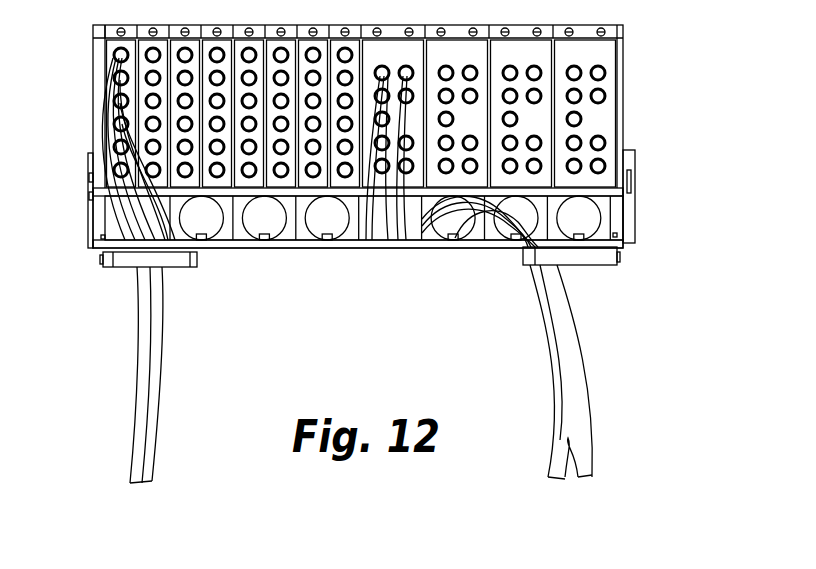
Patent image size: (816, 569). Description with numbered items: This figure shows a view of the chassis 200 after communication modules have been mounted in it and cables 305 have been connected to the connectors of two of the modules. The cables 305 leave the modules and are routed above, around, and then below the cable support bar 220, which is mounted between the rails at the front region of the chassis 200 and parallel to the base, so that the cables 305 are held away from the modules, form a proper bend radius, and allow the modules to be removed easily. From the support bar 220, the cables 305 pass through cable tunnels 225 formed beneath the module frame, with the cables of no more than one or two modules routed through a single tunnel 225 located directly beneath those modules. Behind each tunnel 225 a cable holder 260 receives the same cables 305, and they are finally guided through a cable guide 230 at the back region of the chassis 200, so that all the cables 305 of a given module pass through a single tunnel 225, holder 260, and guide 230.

The chassis 200 is at (654, 145).
The cable support bar 220 is at (580, 190).
The cable tunnels 225 is at (102, 228).
The cable guides 230 is at (168, 264).
The cable holders 260 is at (168, 243).
The cables 305 is at (152, 315).